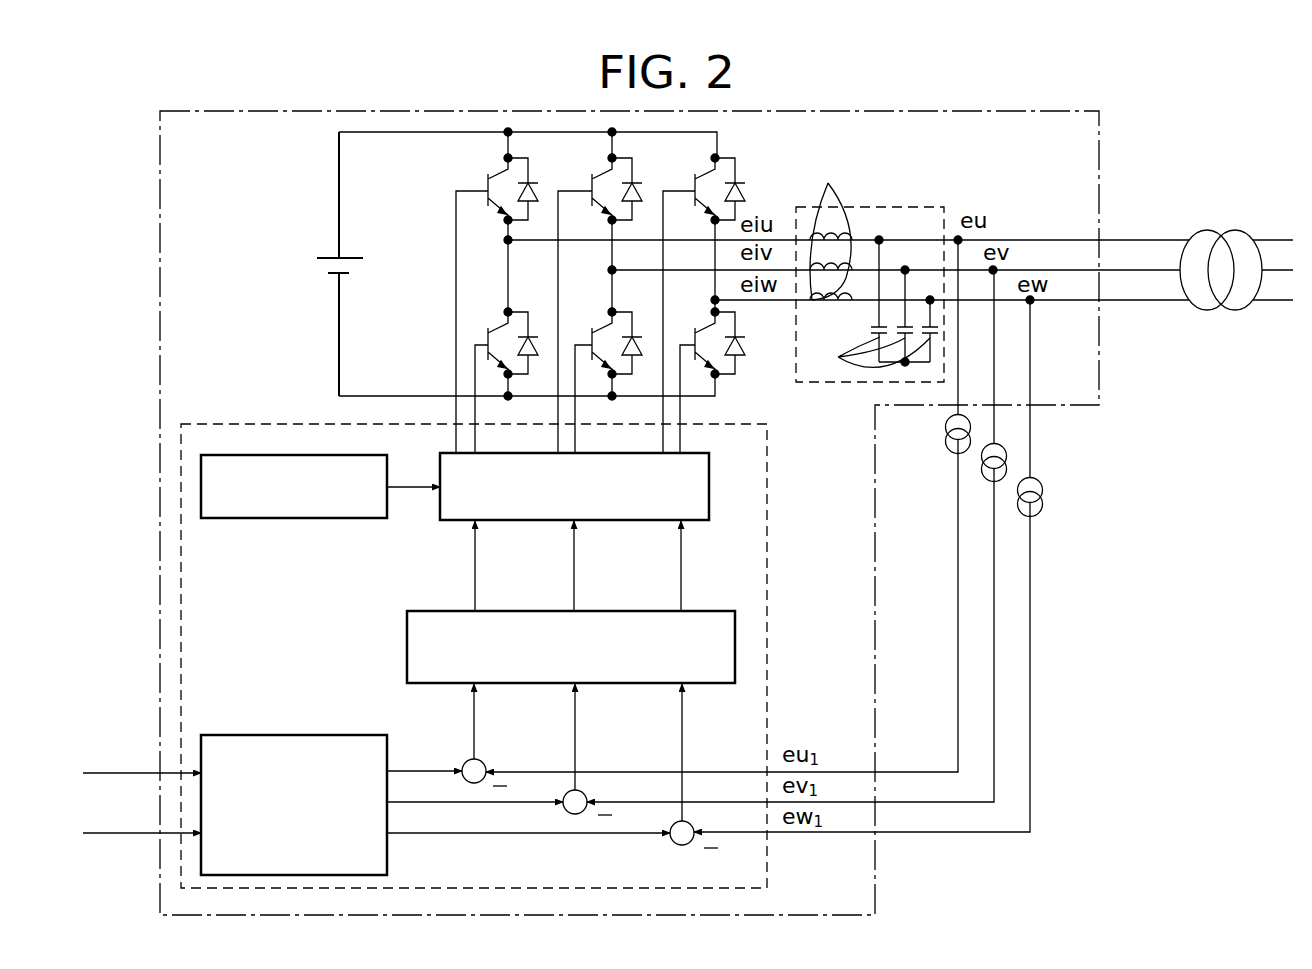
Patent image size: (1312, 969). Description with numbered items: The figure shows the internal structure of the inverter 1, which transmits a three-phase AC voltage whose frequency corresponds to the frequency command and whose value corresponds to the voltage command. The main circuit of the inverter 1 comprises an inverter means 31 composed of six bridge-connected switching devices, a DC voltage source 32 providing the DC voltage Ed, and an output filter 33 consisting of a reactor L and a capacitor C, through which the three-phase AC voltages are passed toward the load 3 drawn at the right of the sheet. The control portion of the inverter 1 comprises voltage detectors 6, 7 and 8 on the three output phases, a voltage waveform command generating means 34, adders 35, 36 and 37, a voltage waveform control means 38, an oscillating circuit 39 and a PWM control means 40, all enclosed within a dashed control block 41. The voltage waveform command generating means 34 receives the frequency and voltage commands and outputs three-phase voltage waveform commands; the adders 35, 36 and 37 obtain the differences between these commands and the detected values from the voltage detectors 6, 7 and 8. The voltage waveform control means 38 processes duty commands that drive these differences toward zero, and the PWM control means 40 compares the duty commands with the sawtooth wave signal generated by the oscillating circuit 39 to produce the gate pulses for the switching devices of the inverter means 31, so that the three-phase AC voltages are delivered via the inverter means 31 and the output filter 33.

The inverter 1 is at (1099, 224).
The load (motor) 3 is at (1205, 230).
The voltage detector 6 is at (946, 444).
The voltage detector 7 is at (990, 482).
The voltage detector 8 is at (1042, 506).
The inverter means 31 is at (718, 140).
The DC voltage source 32 is at (358, 257).
The output filter 33 is at (903, 206).
The voltage waveform command generating means 34 is at (303, 735).
The adder 35 is at (486, 764).
The adder 36 is at (587, 795).
The adder 37 is at (694, 828).
The voltage waveform control means 38 is at (407, 647).
The oscillating circuit 39 is at (337, 520).
The PWM control means 40 is at (710, 490).
The control unit 41 is at (180, 683).